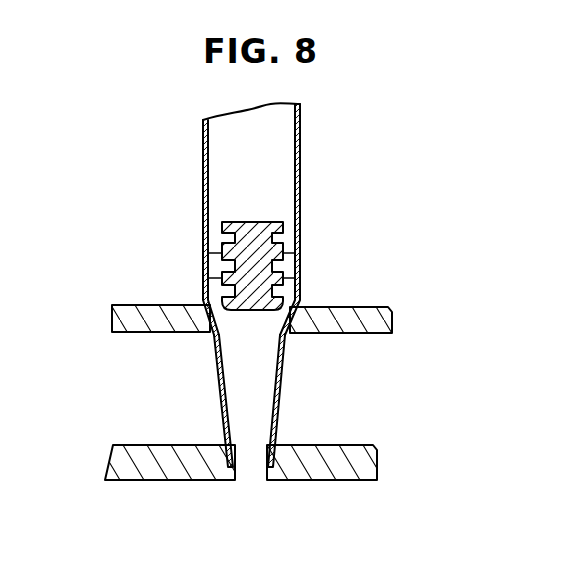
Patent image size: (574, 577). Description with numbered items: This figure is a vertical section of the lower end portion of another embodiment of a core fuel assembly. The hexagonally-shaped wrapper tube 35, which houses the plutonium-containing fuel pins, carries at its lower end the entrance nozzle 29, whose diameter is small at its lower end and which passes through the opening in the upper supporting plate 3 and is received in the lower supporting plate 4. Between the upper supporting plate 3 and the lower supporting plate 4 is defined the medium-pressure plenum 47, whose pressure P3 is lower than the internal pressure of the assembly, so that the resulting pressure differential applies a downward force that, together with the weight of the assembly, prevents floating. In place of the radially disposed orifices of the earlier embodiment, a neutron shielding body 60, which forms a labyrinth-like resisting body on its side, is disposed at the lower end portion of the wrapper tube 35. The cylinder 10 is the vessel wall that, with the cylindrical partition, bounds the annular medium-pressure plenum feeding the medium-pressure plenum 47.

The wrapper tube 35 is at (300, 164).
The neutron shielding body 60 is at (283, 224).
The upper supporting plate 3 is at (360, 318).
The entrance nozzle 29 is at (284, 388).
The medium-pressure plenum 47 is at (361, 395).
The lower supporting plate 4 is at (364, 470).
The cylinder 10 is at (254, 506).
The pressure of the medium-pressure plenum P3 is at (168, 391).